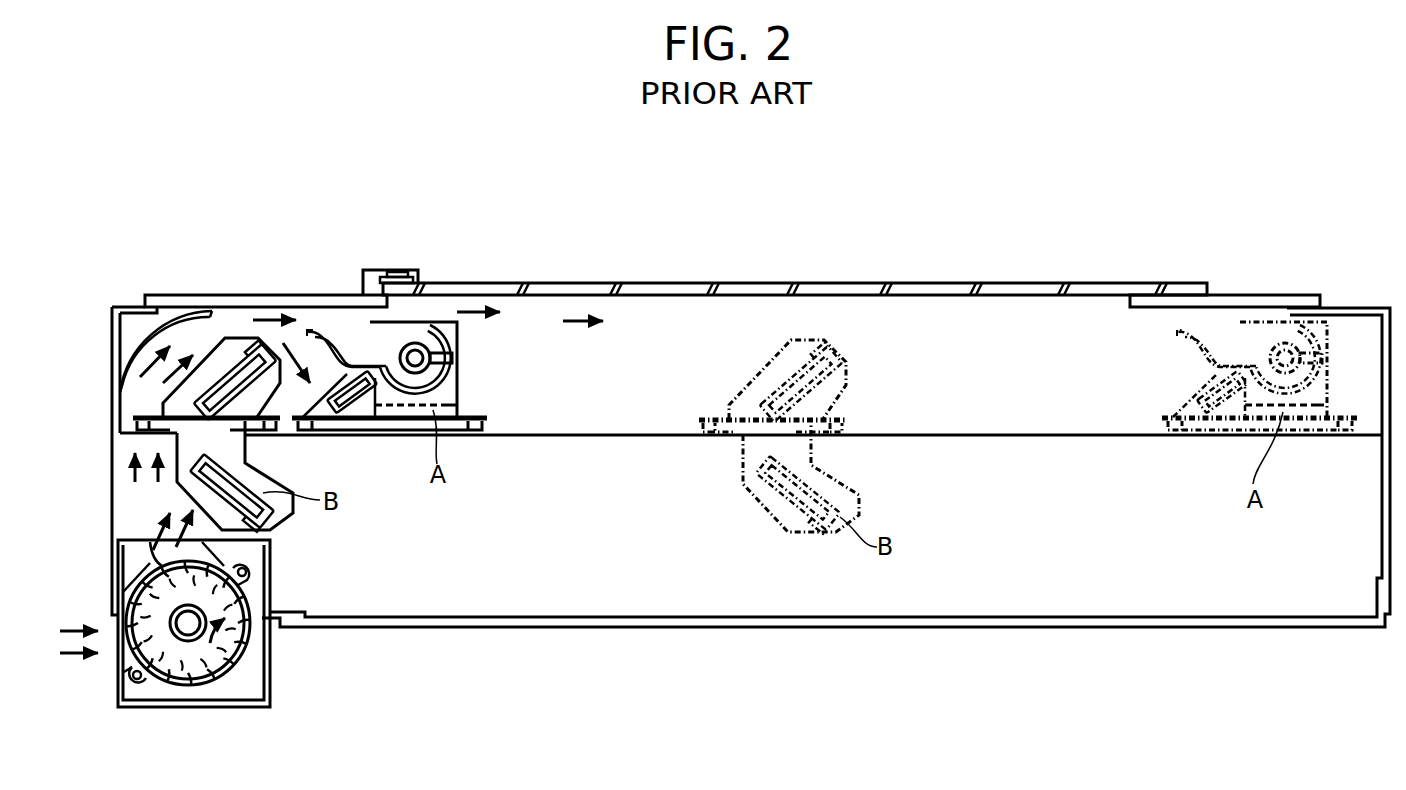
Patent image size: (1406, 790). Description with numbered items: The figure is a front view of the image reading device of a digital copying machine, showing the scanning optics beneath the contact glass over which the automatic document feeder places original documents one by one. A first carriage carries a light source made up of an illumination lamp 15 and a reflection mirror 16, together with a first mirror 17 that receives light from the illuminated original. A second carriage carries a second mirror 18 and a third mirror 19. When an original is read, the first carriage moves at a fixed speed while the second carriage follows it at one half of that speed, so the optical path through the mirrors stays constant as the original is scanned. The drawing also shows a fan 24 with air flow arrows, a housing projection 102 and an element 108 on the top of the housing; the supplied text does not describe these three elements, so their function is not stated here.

The illumination lamp 15 is at (422, 343).
The reflection mirror 16 is at (441, 378).
The first mirror 17 is at (356, 405).
The second mirror 18 is at (243, 358).
The third mirror 19 is at (268, 530).
The fan 24 is at (253, 678).
The housing projection 102 is at (375, 272).
The connector 108 is at (402, 268).